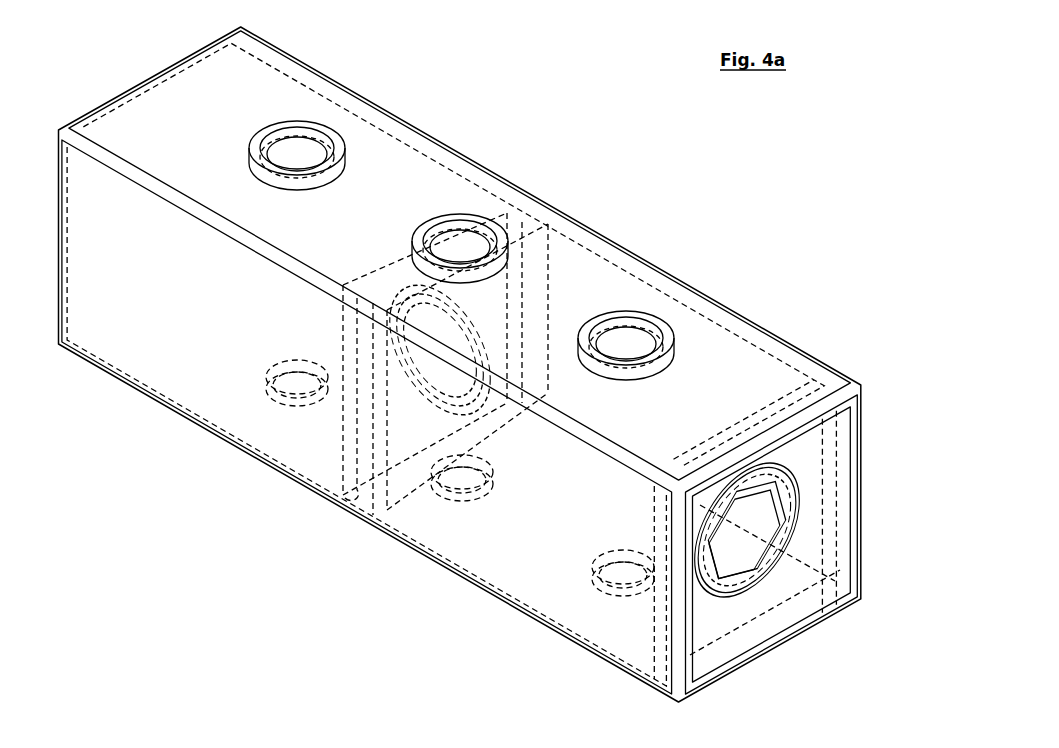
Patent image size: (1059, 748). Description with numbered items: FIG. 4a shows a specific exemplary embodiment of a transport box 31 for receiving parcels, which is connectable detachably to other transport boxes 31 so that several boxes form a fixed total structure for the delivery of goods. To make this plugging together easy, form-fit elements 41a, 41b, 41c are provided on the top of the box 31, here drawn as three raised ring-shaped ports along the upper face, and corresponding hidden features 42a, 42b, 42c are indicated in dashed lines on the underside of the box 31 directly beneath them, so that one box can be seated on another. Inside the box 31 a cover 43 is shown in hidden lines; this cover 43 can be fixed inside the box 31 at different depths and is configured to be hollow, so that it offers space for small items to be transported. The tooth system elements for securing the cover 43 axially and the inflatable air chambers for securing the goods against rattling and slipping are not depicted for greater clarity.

The transport box 31 is at (280, 82).
The form-fit element 41a is at (325, 133).
The form-fit element 41b is at (488, 228).
The form-fit element 41c is at (652, 321).
The first lower connection port 42a is at (288, 385).
The second lower connection port 42b is at (460, 482).
The third lower connection port 42c is at (623, 573).
The cover 43 is at (362, 453).